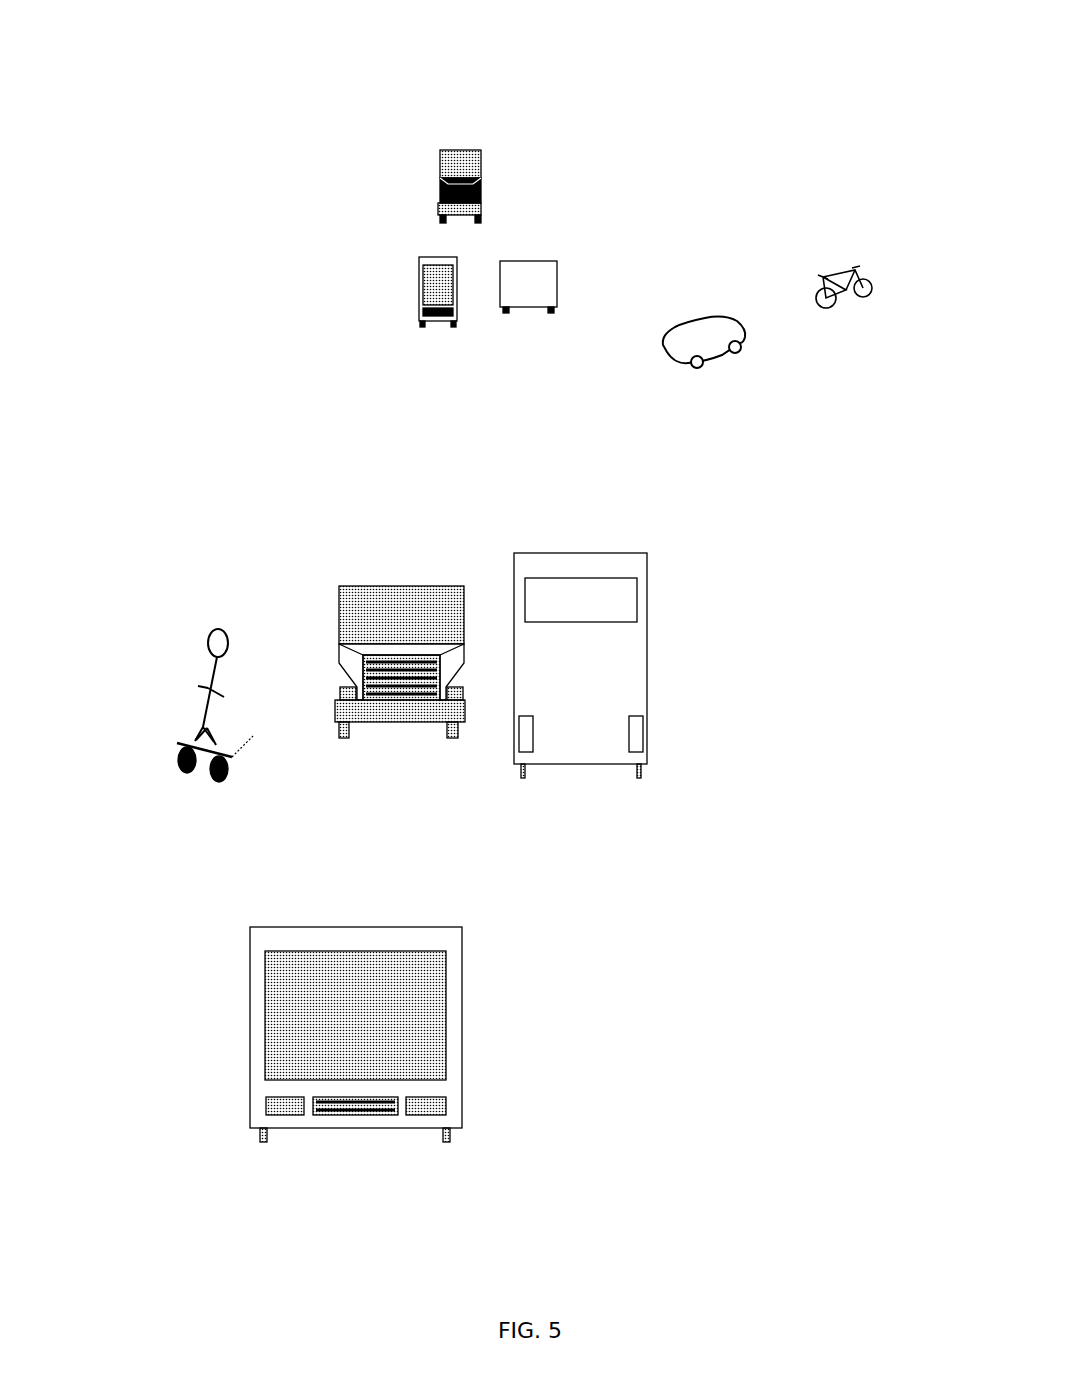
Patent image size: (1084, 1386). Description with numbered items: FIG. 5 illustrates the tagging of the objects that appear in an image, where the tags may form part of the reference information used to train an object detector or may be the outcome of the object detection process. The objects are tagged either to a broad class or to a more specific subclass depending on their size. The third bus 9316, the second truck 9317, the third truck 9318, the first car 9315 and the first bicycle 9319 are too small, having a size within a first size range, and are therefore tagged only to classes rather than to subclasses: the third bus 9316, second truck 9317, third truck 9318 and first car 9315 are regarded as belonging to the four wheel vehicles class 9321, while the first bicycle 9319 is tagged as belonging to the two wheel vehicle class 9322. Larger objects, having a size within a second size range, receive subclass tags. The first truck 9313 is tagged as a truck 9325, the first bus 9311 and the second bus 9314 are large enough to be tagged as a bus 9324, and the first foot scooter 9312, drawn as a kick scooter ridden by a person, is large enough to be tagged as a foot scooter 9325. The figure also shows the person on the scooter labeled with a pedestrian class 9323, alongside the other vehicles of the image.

The first bus 9311 is at (338, 926).
The first foot scooter 9312 is at (178, 776).
The first truck 9313 is at (397, 585).
The second bus 9314 is at (636, 553).
The first car 9315 is at (737, 320).
The third bus 9316 is at (440, 325).
The second truck 9317 is at (558, 286).
The third truck 9318 is at (438, 190).
The first bicycle 9319 is at (874, 297).
The four wheel vehicles class 9321 is at (742, 386).
The two wheel vehicle class 9322 is at (852, 278).
The pedestrian class 9323 is at (207, 648).
The bus 9324 is at (648, 640).
The truck / foot scooter 9325 is at (437, 585).